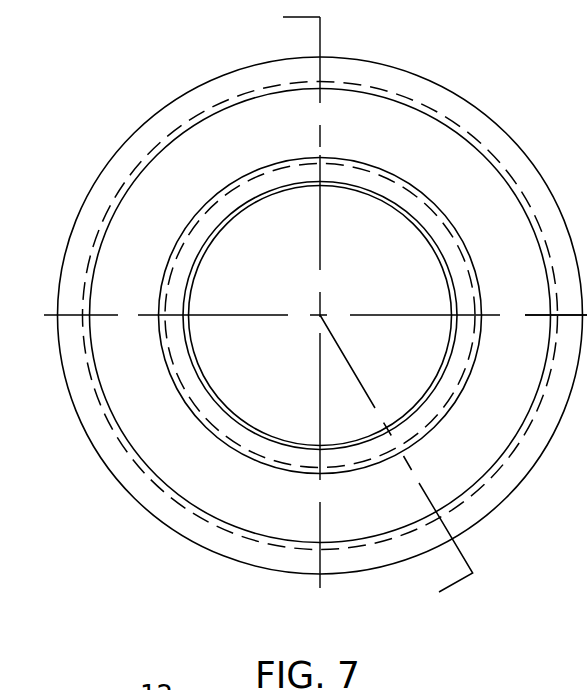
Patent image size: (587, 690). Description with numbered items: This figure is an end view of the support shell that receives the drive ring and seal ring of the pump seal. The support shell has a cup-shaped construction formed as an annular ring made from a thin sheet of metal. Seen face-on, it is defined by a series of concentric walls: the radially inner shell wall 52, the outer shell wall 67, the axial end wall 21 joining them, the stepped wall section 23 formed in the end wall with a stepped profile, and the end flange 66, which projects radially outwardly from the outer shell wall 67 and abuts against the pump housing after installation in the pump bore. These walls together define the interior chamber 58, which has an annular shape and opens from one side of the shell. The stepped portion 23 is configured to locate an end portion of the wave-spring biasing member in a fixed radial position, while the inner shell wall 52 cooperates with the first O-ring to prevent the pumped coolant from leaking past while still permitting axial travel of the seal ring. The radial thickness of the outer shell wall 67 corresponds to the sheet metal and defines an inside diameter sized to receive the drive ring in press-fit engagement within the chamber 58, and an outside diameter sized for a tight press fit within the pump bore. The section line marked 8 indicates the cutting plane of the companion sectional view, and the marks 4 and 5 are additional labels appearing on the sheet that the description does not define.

The dispensing apparatus 4 is at (432, 12).
The circumferential flange 66 is at (437, 93).
The outer shell wall 67 is at (178, 115).
The axial end wall 21 is at (257, 505).
The interior chamber 58 is at (127, 398).
The stepped portion 23 is at (408, 427).
The inner shell wall 52 is at (227, 412).
The section line 8- 8 is at (349, 319).
The housing 5 is at (556, 210).